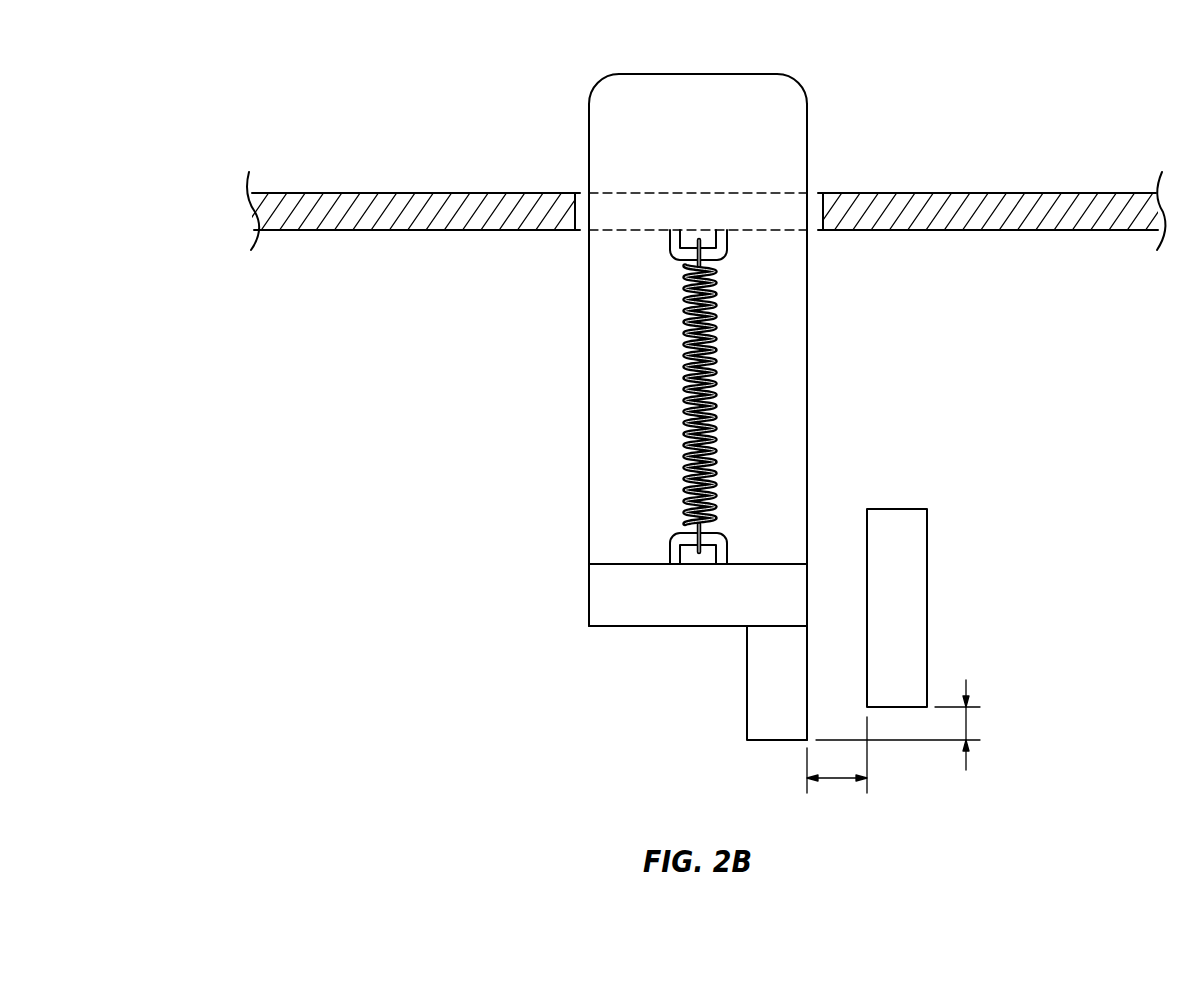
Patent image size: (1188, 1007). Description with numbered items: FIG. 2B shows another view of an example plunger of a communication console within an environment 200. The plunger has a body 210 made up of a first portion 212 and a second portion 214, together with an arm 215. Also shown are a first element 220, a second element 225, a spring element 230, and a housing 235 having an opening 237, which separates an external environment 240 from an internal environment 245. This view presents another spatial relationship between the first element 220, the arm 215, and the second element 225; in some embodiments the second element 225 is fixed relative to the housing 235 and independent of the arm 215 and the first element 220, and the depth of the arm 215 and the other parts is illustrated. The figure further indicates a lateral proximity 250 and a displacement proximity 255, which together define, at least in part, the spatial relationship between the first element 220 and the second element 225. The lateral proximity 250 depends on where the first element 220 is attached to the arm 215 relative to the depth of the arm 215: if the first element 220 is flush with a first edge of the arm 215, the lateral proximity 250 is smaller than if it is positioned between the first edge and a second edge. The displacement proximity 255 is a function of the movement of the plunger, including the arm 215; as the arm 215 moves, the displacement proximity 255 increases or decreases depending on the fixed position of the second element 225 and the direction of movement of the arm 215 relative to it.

The environment 200 is at (206, 76).
The body 210 is at (589, 405).
The first portion 212 is at (742, 74).
The second portion 214 is at (790, 425).
The arm 215 is at (589, 591).
The first element 220 is at (747, 693).
The second element 225 is at (927, 608).
The spring element 230 is at (680, 370).
The housing 235 is at (433, 193).
The opening 237 is at (578, 185).
The external environment 240 is at (1048, 120).
The internal environment 245 is at (1083, 520).
The lateral proximity 250 is at (835, 778).
The displacement proximity 255 is at (966, 727).